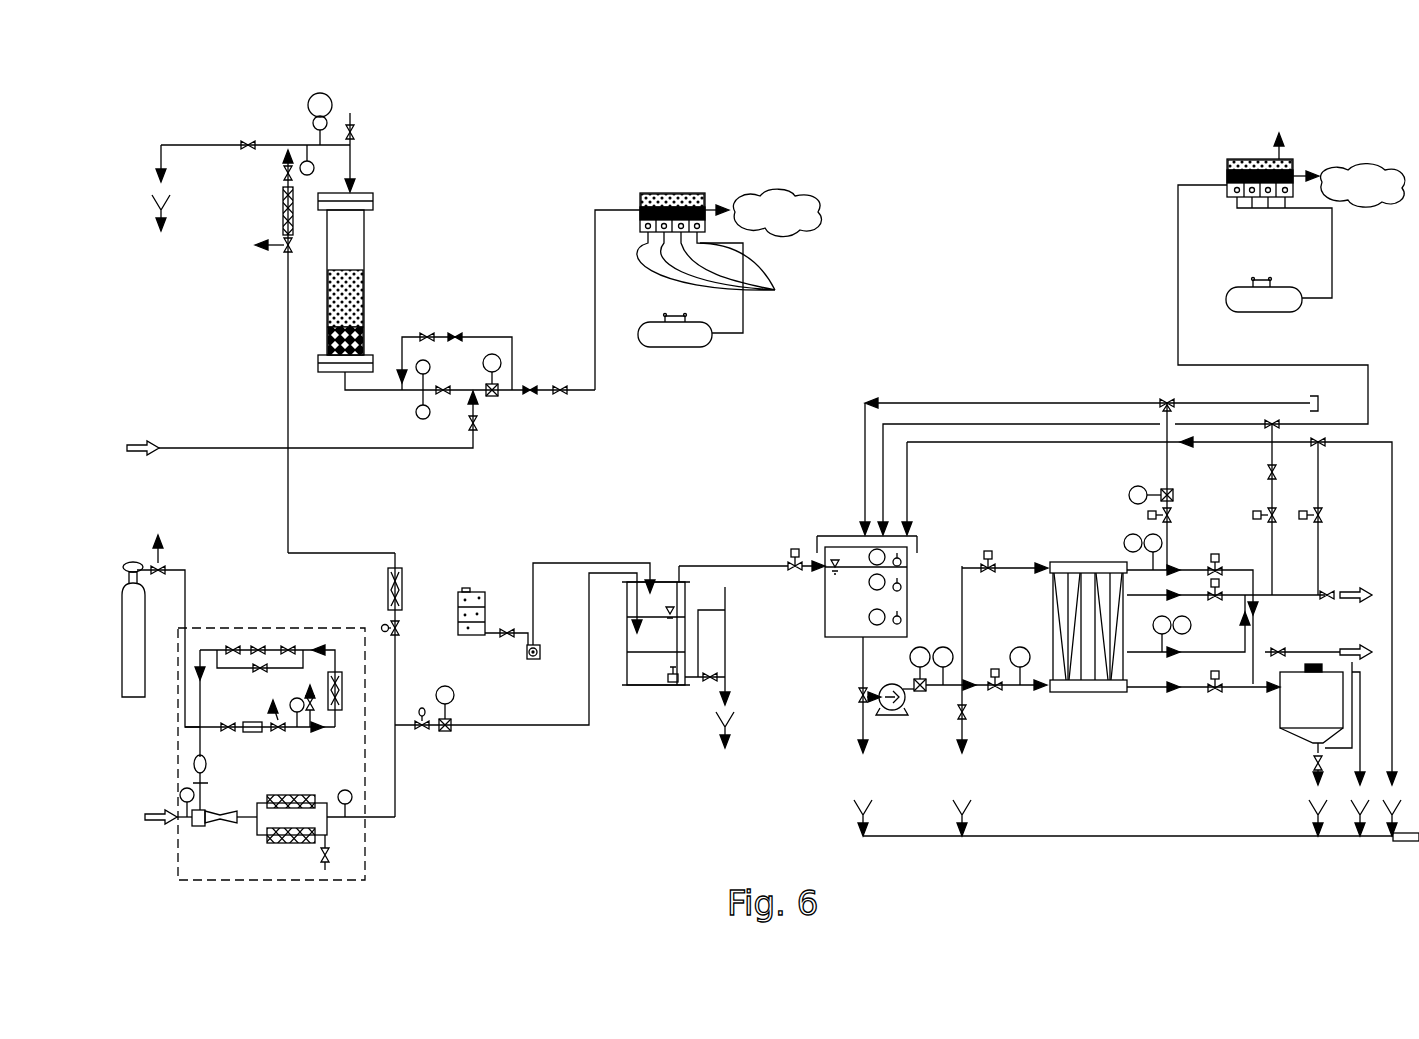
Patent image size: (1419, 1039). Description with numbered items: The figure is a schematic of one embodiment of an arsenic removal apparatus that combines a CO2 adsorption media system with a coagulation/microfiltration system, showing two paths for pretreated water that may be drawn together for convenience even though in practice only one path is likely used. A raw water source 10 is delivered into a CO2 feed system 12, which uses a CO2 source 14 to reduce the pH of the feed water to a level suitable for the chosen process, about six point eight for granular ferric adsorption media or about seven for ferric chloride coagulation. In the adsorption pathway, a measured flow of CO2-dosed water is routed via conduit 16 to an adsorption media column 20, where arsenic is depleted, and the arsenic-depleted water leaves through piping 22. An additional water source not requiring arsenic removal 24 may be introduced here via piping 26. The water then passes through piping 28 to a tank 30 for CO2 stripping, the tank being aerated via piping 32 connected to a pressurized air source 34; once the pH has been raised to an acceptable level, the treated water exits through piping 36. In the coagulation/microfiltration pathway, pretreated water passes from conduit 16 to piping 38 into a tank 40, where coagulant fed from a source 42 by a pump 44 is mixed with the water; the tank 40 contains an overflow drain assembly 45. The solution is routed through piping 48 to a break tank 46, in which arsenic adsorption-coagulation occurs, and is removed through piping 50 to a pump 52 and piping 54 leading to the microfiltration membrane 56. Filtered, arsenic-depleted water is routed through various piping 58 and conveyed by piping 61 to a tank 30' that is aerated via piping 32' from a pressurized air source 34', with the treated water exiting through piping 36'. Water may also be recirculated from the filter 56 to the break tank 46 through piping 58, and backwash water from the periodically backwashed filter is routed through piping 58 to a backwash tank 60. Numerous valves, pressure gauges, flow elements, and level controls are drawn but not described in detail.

The raw water source 10 is at (165, 826).
The CO2 feed system 12 is at (265, 880).
The CO2 source 14 is at (122, 675).
The conduit 16 is at (395, 790).
The adsorption media column 20 is at (366, 245).
The piping 22 is at (345, 395).
The additional water source not requiring arsenic removal 24 is at (140, 446).
The piping 26 is at (400, 450).
The piping 28 is at (596, 265).
The tank 30 is at (662, 187).
The piping 32 is at (721, 282).
The pressurized air source 34 is at (675, 367).
The piping 36 is at (777, 189).
The tank 30' is at (1247, 140).
The piping 32' is at (1319, 247).
The pressurized air source 34' is at (1288, 313).
The piping 36' is at (1363, 159).
The piping 38 is at (495, 726).
The tank 40 is at (645, 688).
The source 42 is at (462, 588).
The pump 44 is at (528, 660).
The overflow drain assembly 45 is at (725, 653).
The break tank 46 is at (825, 605).
The piping 48 is at (728, 563).
The piping 50 is at (862, 653).
The pump 52 is at (888, 716).
The piping 54 is at (920, 693).
The microfiltration membrane 56 is at (1060, 693).
The piping 58 is at (1045, 400).
The backwash tank 60 is at (1280, 712).
The piping 61 is at (1368, 392).